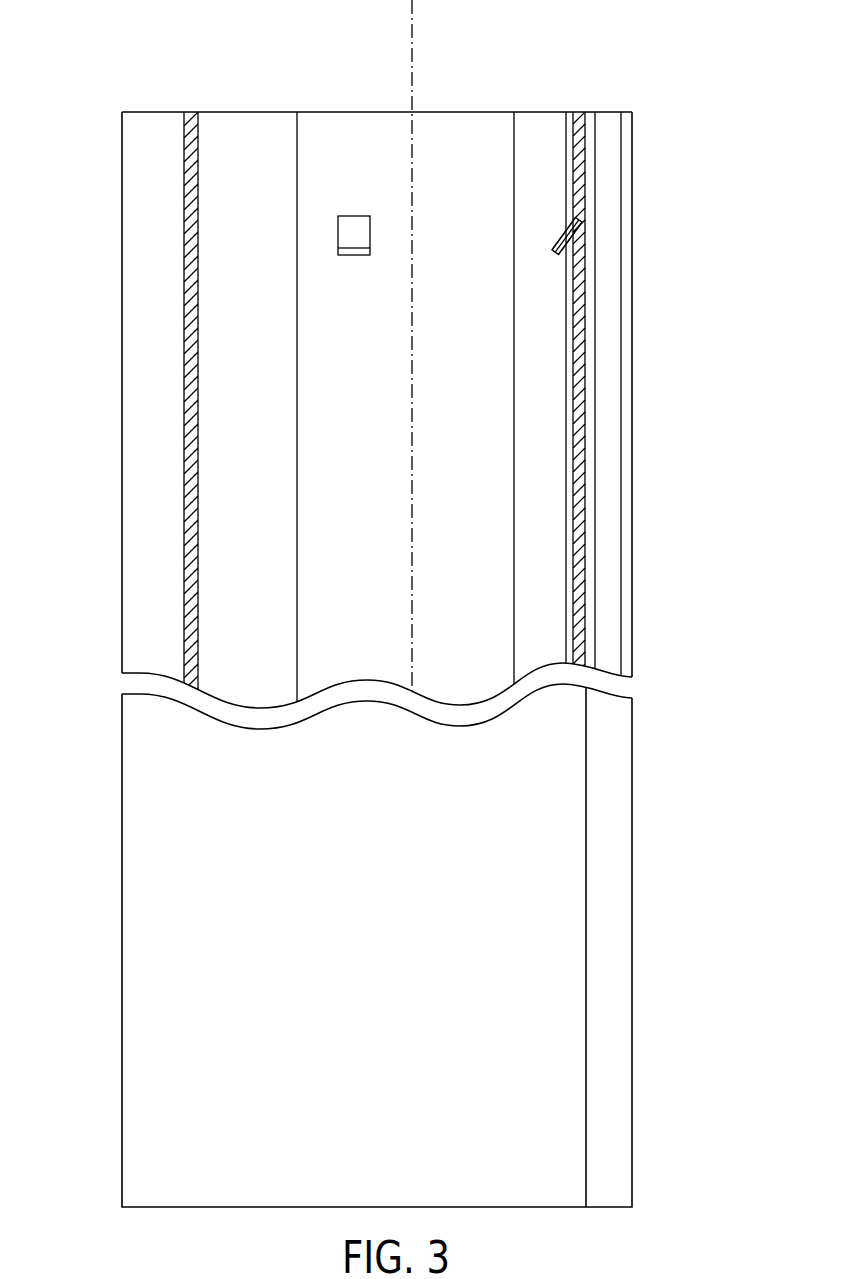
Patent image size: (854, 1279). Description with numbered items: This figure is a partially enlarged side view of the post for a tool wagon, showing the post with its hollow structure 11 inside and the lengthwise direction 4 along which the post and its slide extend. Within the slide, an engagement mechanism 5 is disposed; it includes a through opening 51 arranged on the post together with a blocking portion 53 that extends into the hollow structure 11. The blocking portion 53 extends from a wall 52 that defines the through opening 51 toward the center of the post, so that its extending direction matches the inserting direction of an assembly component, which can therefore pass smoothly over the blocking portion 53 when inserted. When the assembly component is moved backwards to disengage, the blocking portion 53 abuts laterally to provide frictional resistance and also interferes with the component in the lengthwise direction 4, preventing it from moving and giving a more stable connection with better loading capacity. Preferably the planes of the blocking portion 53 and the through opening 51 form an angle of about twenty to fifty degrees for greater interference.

The lengthwise direction 4 is at (412, 57).
The engagement mechanism 5 is at (353, 258).
The hollow structure 11 is at (533, 432).
The through opening 51 is at (583, 243).
The wall 52 is at (580, 248).
The blocking portion 53 is at (559, 234).